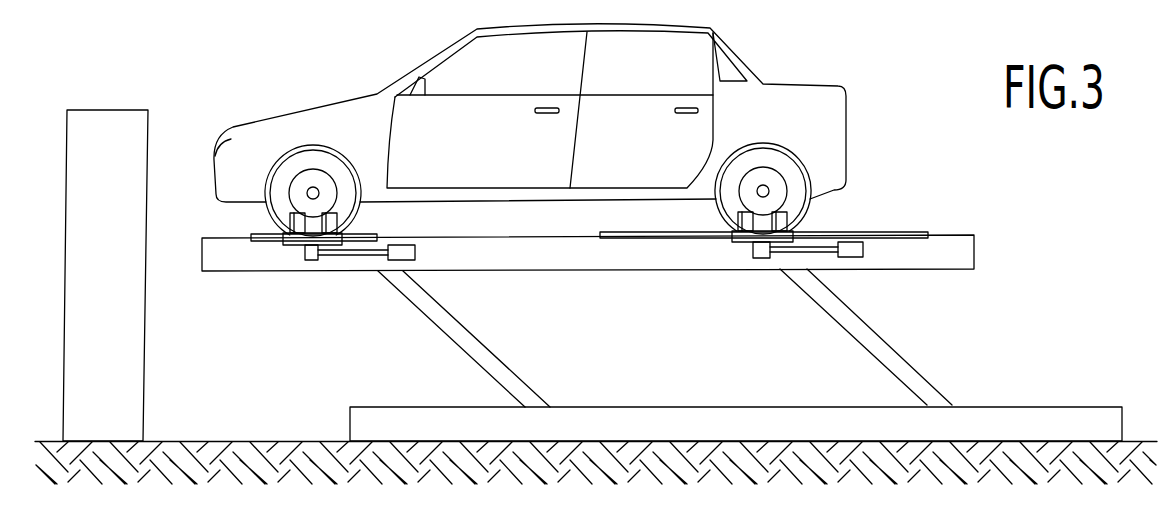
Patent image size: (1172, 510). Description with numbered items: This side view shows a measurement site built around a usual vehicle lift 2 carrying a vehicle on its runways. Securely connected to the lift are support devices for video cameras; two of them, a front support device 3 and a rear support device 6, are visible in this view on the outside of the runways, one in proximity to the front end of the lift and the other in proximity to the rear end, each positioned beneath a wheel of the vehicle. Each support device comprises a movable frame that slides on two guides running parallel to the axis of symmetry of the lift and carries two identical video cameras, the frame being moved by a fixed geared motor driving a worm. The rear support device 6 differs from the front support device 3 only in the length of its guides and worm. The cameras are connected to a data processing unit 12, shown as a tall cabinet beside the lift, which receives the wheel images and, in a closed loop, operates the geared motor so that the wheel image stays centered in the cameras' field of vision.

The vehicle lift 2 is at (608, 279).
The support device 3 is at (356, 292).
The support device 6 is at (764, 299).
The data processing unit 12 is at (90, 293).